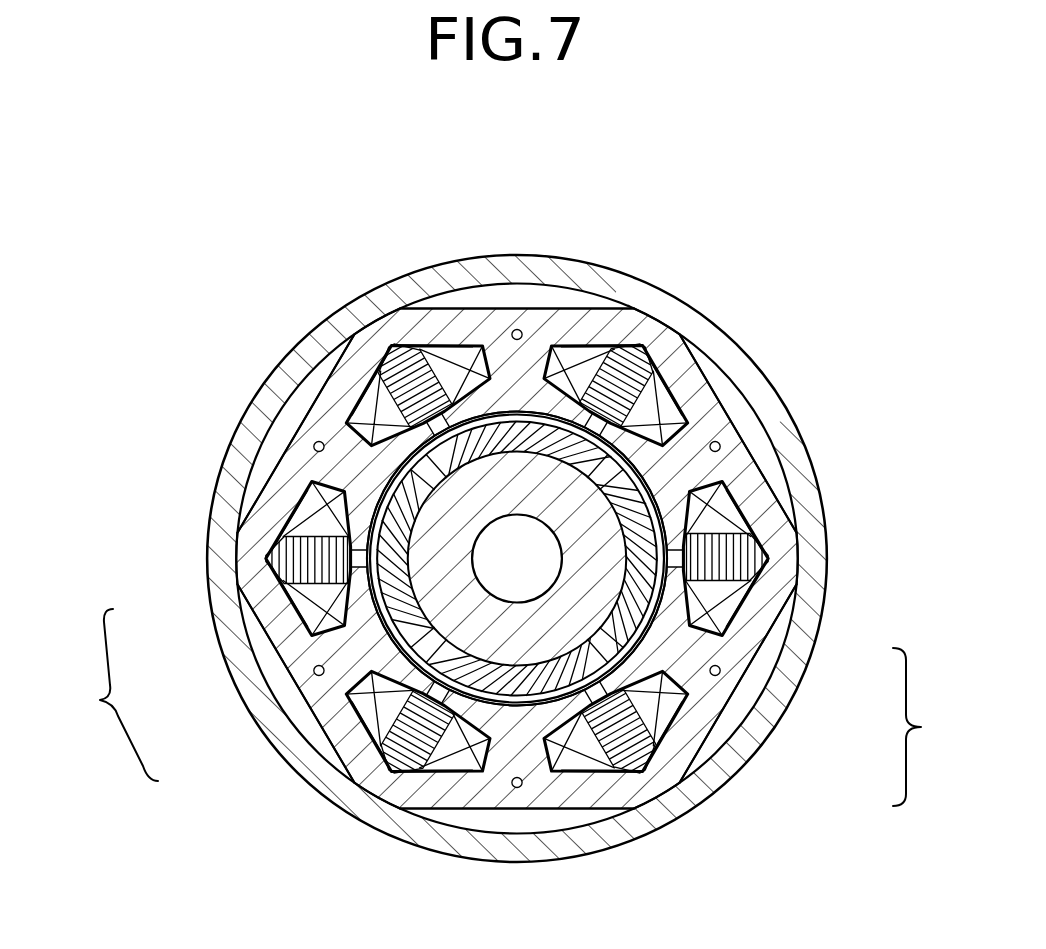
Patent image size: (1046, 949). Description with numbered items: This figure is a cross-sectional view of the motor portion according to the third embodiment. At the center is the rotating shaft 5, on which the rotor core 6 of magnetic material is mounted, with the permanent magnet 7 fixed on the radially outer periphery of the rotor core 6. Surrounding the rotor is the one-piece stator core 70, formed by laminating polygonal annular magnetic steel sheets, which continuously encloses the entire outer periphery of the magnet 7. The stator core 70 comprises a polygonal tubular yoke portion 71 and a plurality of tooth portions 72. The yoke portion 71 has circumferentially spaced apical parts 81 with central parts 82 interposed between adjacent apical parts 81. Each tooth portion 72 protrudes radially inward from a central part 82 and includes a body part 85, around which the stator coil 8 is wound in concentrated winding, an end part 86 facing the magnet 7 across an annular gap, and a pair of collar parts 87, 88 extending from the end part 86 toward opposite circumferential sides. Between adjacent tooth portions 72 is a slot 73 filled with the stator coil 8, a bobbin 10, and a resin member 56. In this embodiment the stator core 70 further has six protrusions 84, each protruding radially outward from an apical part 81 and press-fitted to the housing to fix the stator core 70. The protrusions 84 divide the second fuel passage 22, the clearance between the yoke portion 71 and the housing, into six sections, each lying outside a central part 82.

The rotating shaft 5 is at (365, 405).
The rotor core 6 is at (383, 427).
The permanent magnet 7 is at (513, 545).
The stator coil 8 is at (445, 340).
The bobbin 10 is at (723, 482).
The second fuel passage 22 is at (516, 300).
The resin member 56 is at (663, 415).
The stator core 70 is at (536, 330).
The yoke portion 71 is at (925, 727).
The tooth portion 72 is at (110, 695).
The slot 73 is at (430, 790).
The apical part 81 is at (715, 585).
The central part 82 is at (690, 685).
The protrusion 84 is at (383, 345).
The body part 85 is at (380, 675).
The end part 86 is at (365, 640).
The collar part 87 is at (355, 605).
The collar part 88 is at (400, 700).